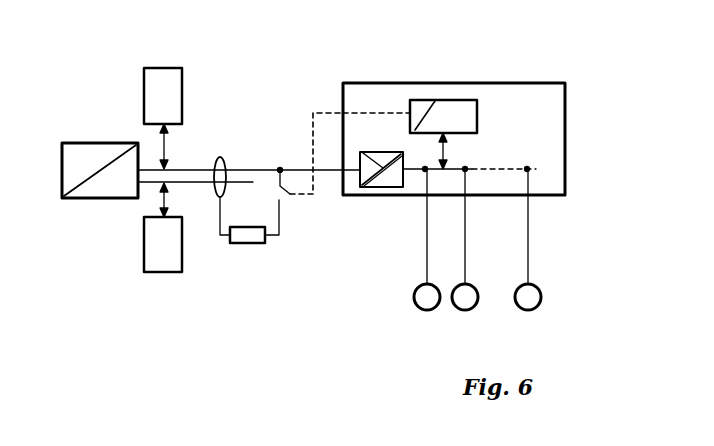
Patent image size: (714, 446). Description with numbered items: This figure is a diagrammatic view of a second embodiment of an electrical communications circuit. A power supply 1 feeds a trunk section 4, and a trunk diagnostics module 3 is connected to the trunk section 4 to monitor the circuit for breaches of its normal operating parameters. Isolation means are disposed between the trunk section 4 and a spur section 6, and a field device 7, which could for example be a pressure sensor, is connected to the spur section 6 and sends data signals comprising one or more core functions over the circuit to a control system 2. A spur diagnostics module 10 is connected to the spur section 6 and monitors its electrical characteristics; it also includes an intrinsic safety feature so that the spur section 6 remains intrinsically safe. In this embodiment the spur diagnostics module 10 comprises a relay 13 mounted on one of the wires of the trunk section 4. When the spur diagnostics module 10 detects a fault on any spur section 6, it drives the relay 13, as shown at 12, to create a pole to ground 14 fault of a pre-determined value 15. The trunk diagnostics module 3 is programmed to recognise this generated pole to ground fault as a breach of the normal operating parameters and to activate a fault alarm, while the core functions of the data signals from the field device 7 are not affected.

The power supply 1 is at (110, 183).
The control system 2 is at (144, 80).
The trunk diagnostics module 3 is at (157, 256).
The trunk section 4 is at (152, 165).
The spur section 6 is at (425, 218).
The field device 7 is at (424, 300).
The spur diagnostics module 10 is at (447, 106).
The relay drive 12 is at (325, 112).
The relay 13 is at (284, 200).
The pole to ground fault 14 is at (218, 158).
The pre-determined value 15 is at (248, 243).